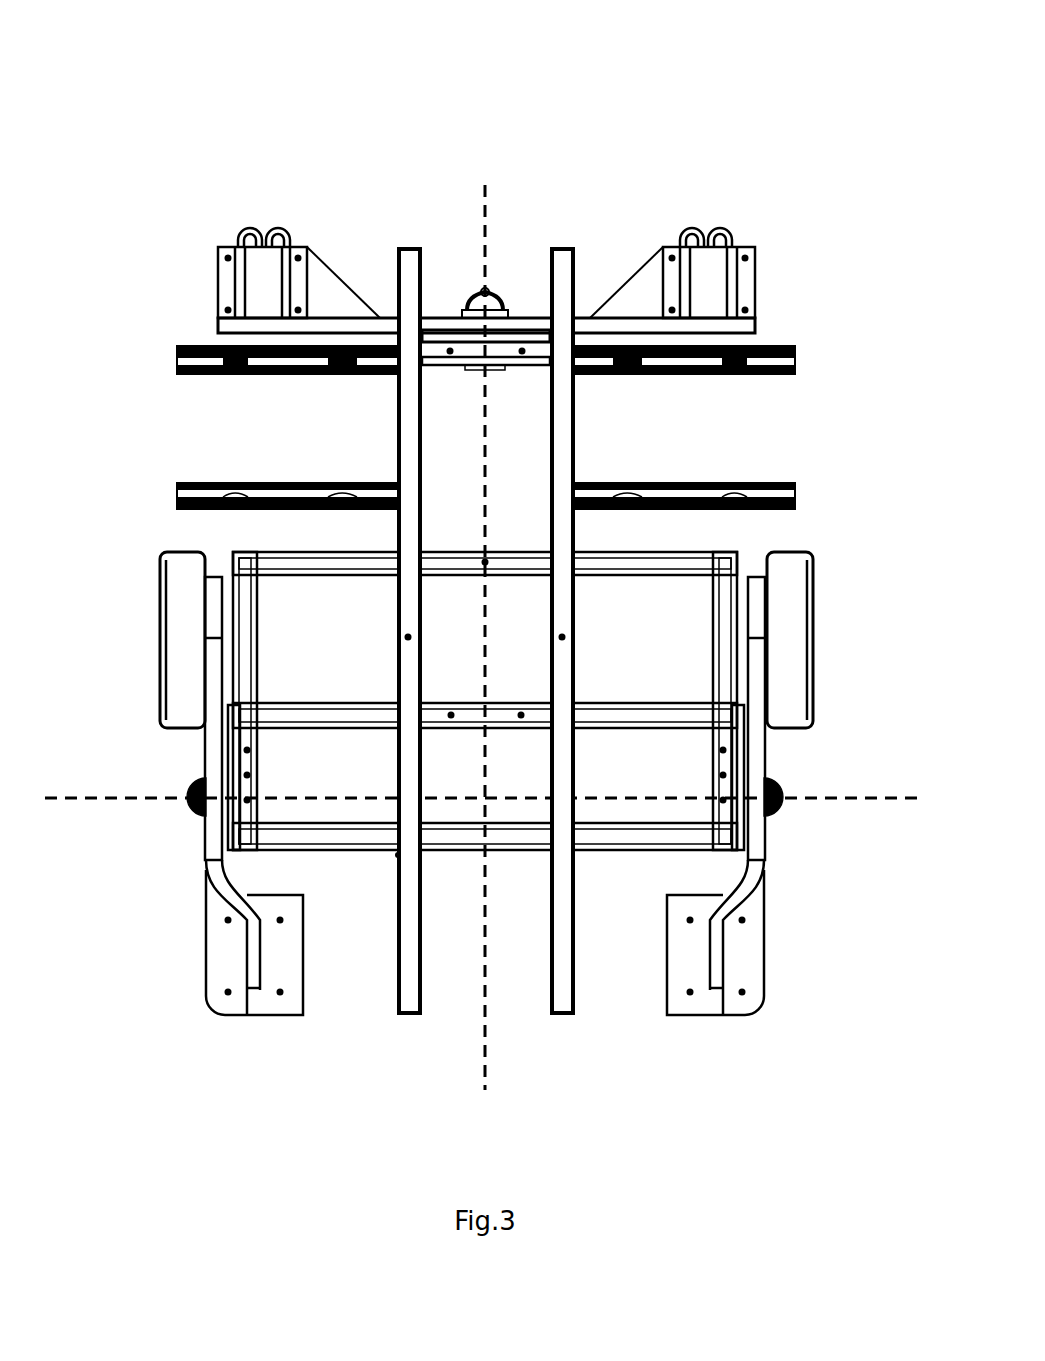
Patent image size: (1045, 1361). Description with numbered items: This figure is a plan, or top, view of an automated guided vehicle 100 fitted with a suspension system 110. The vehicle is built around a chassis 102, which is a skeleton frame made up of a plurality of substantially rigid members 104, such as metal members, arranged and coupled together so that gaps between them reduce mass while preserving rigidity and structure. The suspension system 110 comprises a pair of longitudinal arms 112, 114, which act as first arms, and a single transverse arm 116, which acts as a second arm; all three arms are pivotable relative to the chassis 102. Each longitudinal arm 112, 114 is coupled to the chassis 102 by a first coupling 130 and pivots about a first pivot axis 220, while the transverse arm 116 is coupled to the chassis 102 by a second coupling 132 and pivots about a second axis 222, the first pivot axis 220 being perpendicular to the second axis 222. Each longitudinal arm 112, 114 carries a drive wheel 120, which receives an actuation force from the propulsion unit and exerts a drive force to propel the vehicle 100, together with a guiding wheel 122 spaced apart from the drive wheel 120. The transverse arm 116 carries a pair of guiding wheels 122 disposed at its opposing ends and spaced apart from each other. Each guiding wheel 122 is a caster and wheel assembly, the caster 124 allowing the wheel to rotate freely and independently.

The automated guided vehicle 100 is at (305, 108).
The chassis 102 is at (750, 458).
The members 104 is at (350, 845).
The suspension system 110 is at (160, 527).
The longitudinal arm 112 is at (765, 840).
The longitudinal arm 114 is at (225, 900).
The transverse arm 116 is at (352, 325).
The drive wheel 120 is at (795, 608).
The guiding wheel 122 is at (240, 235).
The caster 124 is at (262, 278).
The first coupling 130 is at (192, 800).
The second coupling 132 is at (497, 292).
The first pivot axis 220 is at (840, 792).
The second axis 222 is at (490, 218).